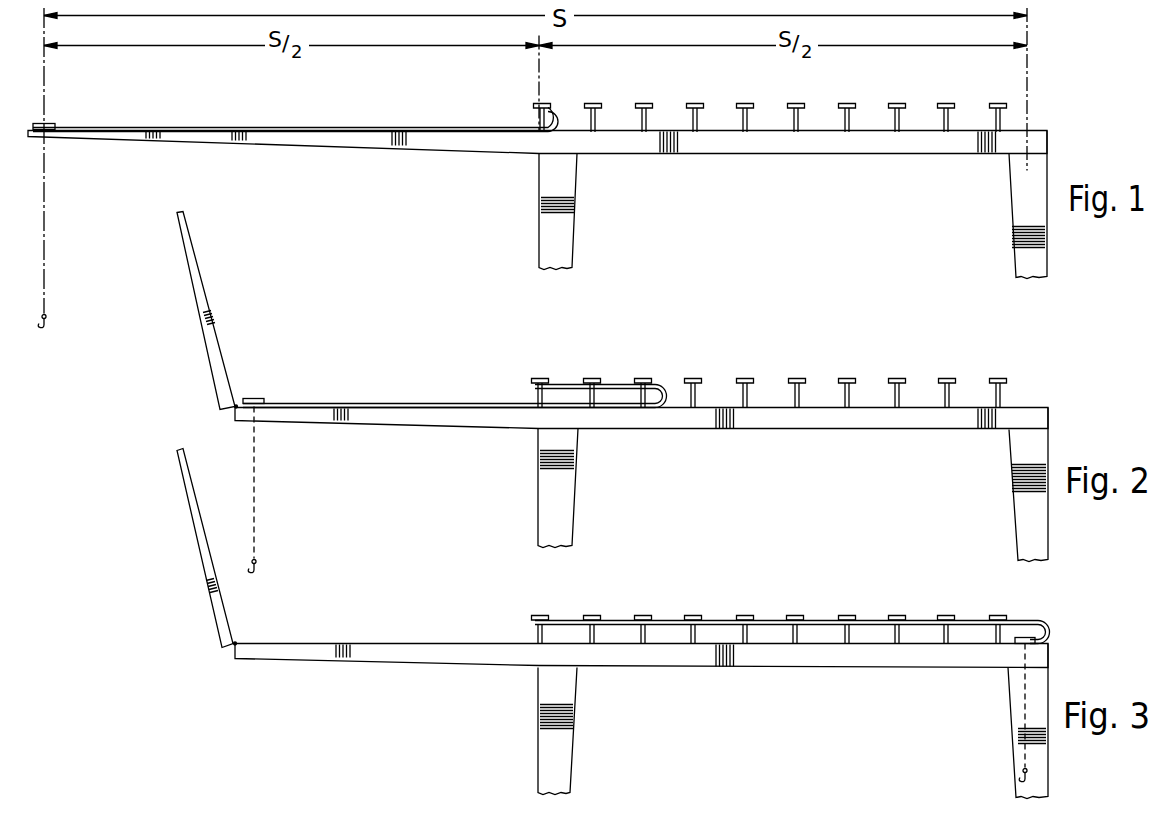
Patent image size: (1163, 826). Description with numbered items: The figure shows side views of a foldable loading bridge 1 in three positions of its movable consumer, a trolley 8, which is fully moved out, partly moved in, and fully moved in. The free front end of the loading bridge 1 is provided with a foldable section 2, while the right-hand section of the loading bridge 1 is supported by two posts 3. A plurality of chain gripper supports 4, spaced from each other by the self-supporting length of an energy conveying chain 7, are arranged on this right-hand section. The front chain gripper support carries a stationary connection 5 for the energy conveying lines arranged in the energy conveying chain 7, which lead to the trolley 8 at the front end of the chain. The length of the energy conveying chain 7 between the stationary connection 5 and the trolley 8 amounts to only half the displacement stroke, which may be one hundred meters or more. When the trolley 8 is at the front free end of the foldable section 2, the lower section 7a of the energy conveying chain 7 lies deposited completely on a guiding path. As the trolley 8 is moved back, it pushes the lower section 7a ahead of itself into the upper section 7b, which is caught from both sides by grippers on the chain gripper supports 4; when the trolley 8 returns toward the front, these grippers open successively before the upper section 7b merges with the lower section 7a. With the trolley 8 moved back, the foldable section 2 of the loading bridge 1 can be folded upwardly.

In FIG. 1, the loading bridge 1 is at (824, 146).
In FIG. 2, the loading bridge 1 is at (781, 430).
In FIG. 3, the loading bridge 1 is at (803, 657).
In FIG. 1, the foldable section 2 is at (131, 137).
In FIG. 2, the foldable section 2 is at (200, 318).
In FIG. 3, the foldable section 2 is at (213, 602).
In FIG. 1, the posts 3 is at (565, 234).
In FIG. 2, the posts 3 is at (565, 495).
In FIG. 3, the posts 3 is at (567, 705).
In FIG. 1, the chain gripper supports 4 is at (692, 103).
In FIG. 2, the chain gripper supports 4 is at (946, 378).
In FIG. 3, the chain gripper supports 4 is at (946, 615).
In FIG. 1, the stationary connection 5 is at (540, 104).
In FIG. 1, the energy conveying chain 7 is at (287, 125).
In FIG. 2, the lower section of the energy conveying chain 7a is at (360, 401).
In FIG. 2, the upper section of the energy conveying chain 7b is at (618, 384).
In FIG. 3, the upper section of the energy conveying chain 7b is at (770, 620).
In FIG. 1, the trolley 8 is at (38, 122).
In FIG. 2, the trolley 8 is at (256, 398).
In FIG. 3, the trolley 8 is at (1046, 625).